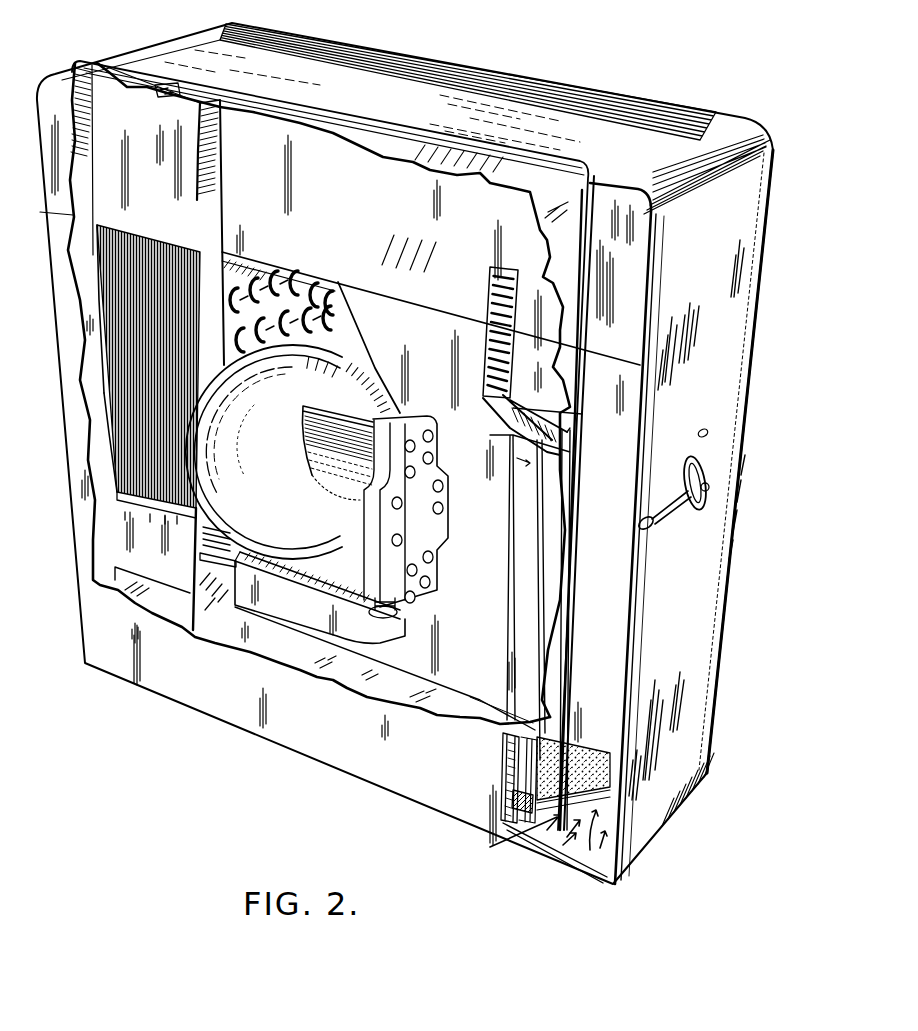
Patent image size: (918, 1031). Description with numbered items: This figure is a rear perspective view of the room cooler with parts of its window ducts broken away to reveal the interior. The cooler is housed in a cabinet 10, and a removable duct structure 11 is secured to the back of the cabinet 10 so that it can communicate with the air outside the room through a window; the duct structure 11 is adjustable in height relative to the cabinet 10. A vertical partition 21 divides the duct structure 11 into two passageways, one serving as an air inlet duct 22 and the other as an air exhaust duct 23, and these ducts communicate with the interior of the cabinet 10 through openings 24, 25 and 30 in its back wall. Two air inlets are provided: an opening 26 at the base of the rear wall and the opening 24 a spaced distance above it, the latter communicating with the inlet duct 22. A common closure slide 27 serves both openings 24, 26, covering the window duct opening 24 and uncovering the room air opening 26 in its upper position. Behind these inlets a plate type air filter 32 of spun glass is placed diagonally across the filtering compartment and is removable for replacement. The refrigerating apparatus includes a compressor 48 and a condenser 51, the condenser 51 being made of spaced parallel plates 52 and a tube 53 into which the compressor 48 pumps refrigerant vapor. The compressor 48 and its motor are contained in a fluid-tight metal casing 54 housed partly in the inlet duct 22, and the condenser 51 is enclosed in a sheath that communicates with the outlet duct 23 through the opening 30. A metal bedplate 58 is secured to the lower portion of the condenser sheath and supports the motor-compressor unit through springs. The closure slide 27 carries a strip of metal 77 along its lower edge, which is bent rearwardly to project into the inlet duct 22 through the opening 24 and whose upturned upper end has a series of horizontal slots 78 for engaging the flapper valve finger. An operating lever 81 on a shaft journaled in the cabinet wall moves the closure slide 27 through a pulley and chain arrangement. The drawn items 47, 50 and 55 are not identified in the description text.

The cabinet 10 is at (733, 402).
The removable duct structure 11 is at (360, 133).
The vertical partition 21 is at (213, 150).
The air inlet duct 22 is at (247, 102).
The air exhaust duct 23 is at (172, 96).
The opening 24 is at (570, 424).
The opening 25 is at (313, 290).
The opening 26 is at (577, 843).
The closure slide 27 is at (521, 488).
The opening 30 is at (100, 266).
The plate type air filter 32 is at (587, 757).
The top grille 47 is at (537, 97).
The compressor 48 is at (382, 457).
The blower housing 50 is at (352, 350).
The condenser 51 is at (107, 393).
The spaced parallel plates 52 is at (107, 433).
The tube 53 is at (338, 296).
The fluid-tight metal casing 54 is at (267, 473).
The motor mounting bracket 55 is at (423, 450).
The metal bedplate 58 is at (300, 583).
The strip of metal 77 is at (494, 337).
The horizontal slots 78 is at (487, 293).
The operating lever 81 is at (673, 491).